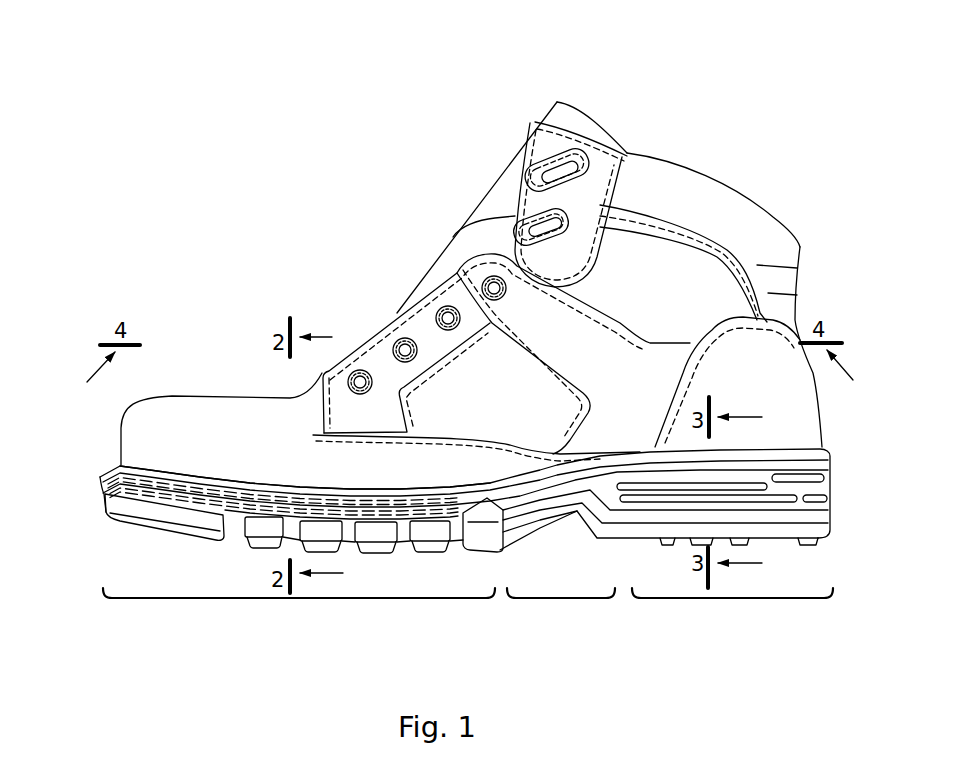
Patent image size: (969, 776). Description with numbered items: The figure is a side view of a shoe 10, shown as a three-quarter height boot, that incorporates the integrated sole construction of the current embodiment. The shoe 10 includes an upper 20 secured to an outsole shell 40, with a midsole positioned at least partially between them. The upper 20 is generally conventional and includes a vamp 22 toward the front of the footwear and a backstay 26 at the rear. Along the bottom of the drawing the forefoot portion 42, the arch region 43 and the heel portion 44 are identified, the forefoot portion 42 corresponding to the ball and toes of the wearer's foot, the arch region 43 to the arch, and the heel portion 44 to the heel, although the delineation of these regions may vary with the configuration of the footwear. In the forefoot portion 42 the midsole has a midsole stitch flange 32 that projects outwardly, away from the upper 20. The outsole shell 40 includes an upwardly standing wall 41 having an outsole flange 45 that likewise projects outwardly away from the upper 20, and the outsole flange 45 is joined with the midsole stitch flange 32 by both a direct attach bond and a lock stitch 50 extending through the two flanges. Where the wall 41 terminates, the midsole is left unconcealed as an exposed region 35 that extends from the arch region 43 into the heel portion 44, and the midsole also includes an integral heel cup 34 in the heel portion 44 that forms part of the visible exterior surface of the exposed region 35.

The shoe 10 is at (328, 142).
The upper 20 is at (798, 278).
The vamp 22 is at (233, 417).
The backstay 26 is at (772, 357).
The midsole stitch flange 32 is at (99, 475).
The integral heel cup 34 is at (716, 491).
The exposed region 35 is at (757, 515).
The outsole shell 40 is at (185, 535).
The upwardly standing wall 41 is at (140, 493).
The forefoot portion 42 is at (307, 603).
The arch region 43 is at (562, 603).
The heel portion 44 is at (732, 603).
The outsole flange 45 is at (98, 482).
The lock stitch 50 is at (282, 478).